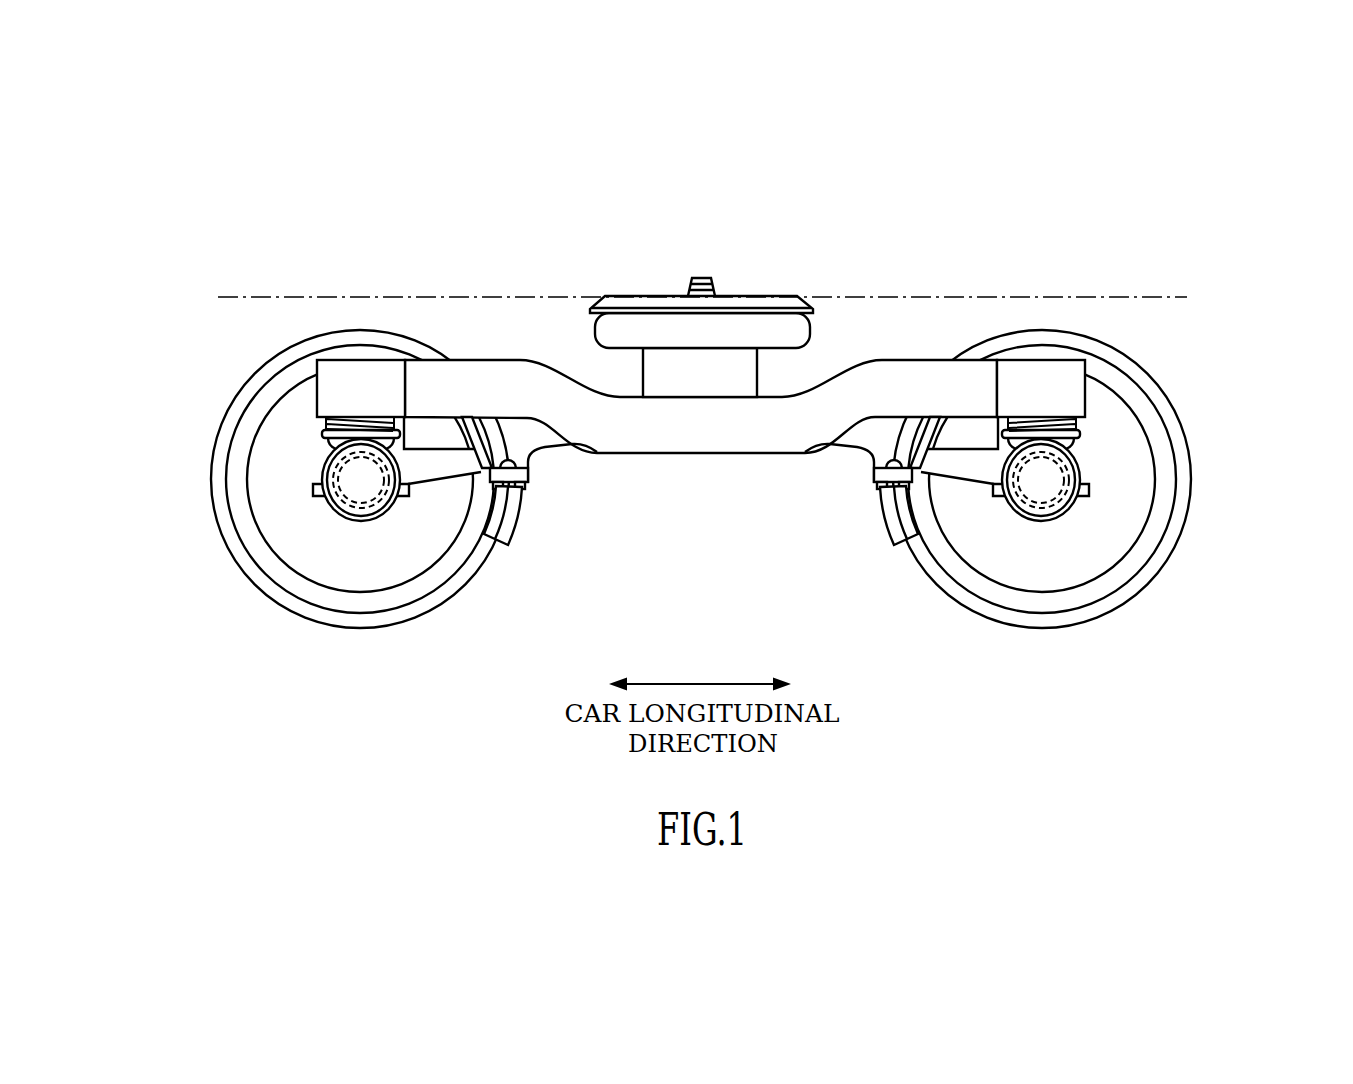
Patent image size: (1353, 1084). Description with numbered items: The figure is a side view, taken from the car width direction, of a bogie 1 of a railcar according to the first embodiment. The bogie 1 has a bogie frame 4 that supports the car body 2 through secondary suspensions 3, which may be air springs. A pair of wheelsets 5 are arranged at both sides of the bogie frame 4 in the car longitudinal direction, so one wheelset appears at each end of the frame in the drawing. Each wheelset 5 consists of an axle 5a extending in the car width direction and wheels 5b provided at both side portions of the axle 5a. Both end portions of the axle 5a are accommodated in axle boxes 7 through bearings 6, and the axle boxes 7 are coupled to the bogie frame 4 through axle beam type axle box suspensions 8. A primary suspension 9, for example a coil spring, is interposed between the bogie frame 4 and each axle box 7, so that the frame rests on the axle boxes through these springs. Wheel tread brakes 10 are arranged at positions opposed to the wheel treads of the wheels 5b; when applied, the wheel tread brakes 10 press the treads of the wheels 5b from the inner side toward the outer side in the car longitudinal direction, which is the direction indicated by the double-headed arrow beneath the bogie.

The bogie 1 is at (297, 248).
The car body 2 is at (1150, 300).
The secondary suspension 3 is at (778, 303).
The bogie frame 4 is at (697, 445).
The wheelset 5 is at (700, 503).
The axle 5a is at (333, 508).
The wheel 5b is at (231, 546).
The bearing 6 is at (356, 525).
The axle box 7 is at (323, 463).
The axle box suspension 8 is at (443, 521).
The primary suspension 9 is at (327, 421).
The wheel tread brake 10 is at (527, 508).